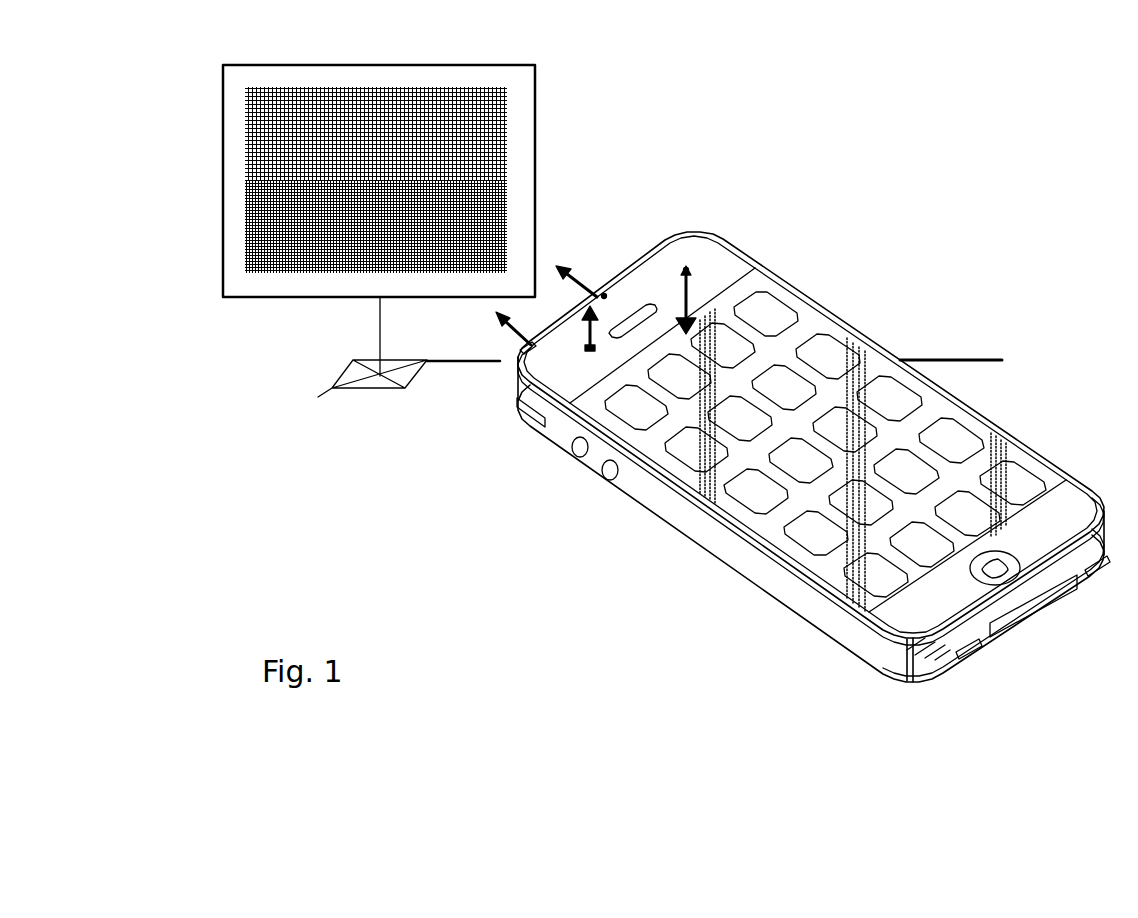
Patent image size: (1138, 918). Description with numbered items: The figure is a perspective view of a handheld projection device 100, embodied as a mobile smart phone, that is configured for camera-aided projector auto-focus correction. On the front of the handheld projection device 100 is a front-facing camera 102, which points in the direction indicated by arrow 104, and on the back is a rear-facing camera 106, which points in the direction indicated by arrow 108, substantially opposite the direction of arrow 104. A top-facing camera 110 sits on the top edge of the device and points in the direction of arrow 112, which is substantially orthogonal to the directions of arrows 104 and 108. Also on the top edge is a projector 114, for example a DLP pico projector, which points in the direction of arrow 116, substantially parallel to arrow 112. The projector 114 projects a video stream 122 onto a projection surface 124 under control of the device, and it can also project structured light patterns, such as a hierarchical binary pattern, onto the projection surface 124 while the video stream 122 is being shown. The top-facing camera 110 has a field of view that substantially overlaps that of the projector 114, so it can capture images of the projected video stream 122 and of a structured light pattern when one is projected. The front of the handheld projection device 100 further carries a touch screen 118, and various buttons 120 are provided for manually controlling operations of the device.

The handheld projection device 100 is at (750, 436).
The front-facing camera 102 is at (588, 346).
The arrow 104 is at (570, 327).
The rear-facing camera 106 is at (688, 272).
The arrow 108 is at (689, 305).
The top-facing camera 110 is at (603, 295).
The arrow 112 is at (600, 290).
The projector 114 is at (503, 347).
The arrow 116 is at (497, 330).
The touch screen 118 is at (937, 412).
The buttons 120 is at (523, 436).
The video stream 122 is at (329, 180).
The projection surface 124 is at (343, 200).